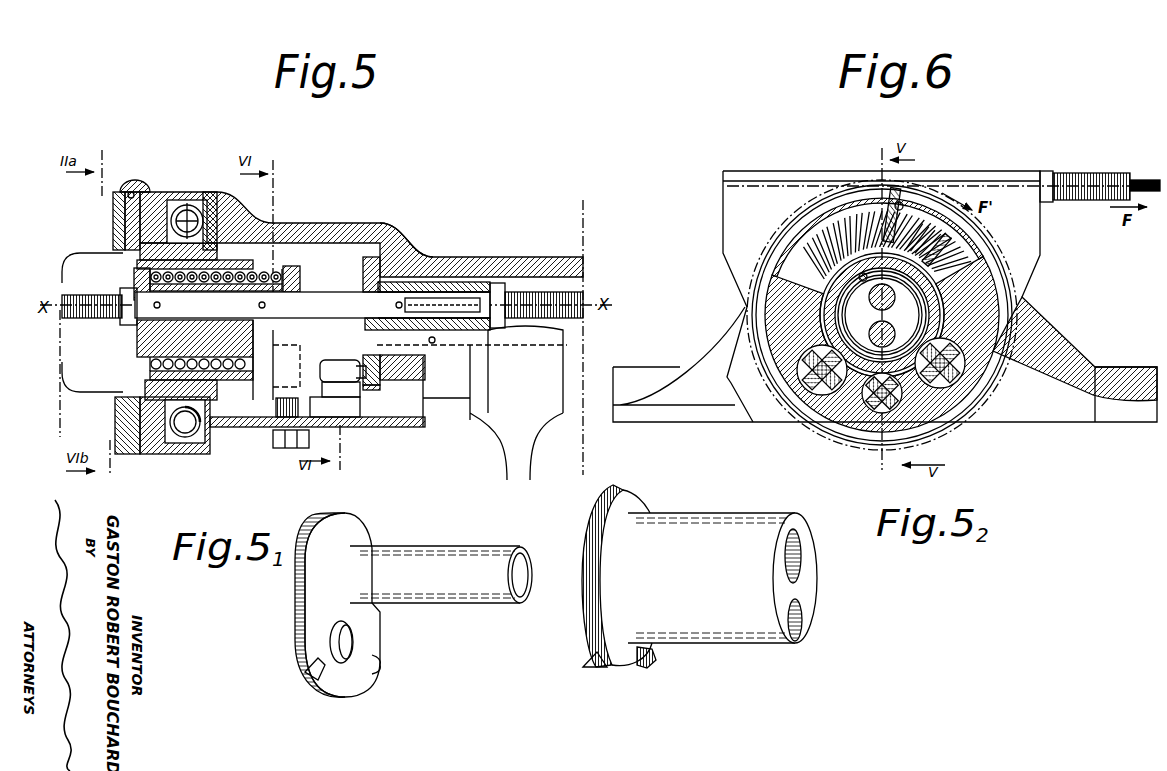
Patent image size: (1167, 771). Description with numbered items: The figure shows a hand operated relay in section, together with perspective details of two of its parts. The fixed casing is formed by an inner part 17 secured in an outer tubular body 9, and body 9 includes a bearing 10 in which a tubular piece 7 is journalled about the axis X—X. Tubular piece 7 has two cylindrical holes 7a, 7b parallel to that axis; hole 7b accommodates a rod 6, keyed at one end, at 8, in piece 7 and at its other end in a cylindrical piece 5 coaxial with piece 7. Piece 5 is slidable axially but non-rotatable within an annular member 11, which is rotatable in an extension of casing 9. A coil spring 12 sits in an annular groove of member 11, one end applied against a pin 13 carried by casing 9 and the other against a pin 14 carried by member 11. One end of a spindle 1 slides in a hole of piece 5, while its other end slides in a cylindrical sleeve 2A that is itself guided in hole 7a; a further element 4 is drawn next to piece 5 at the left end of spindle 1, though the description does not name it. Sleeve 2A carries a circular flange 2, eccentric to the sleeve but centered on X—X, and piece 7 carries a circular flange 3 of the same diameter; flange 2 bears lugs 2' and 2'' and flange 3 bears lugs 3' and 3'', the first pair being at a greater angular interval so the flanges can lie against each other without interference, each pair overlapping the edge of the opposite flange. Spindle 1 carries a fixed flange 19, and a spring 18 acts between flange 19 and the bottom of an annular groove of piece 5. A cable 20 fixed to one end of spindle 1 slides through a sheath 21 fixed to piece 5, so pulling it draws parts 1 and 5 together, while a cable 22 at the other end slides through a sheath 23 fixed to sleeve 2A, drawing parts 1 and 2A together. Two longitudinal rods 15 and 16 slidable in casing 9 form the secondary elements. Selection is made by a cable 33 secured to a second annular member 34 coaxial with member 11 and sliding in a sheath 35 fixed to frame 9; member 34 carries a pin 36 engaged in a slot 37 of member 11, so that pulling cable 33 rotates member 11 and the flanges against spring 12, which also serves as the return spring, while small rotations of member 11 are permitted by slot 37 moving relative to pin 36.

In FIG. 5, the spindle 1 is at (318, 300).
In FIG. 6, the spindle 1 is at (772, 262).
In FIG. 5, the circular flange 2 is at (376, 246).
In FIG. 6, the circular flange 2 is at (938, 315).
The circular flange 2 is at (338, 600).
In FIG. 5, the cylindrical sleeve 2A is at (428, 290).
The cylindrical sleeve 2A is at (415, 562).
The lug 2' is at (294, 678).
The lug 2'' is at (401, 668).
In FIG. 5, the circular flange 3 is at (406, 232).
In FIG. 6, the circular flange 3 is at (947, 315).
The circular flange 3 is at (626, 571).
In FIG. 5, the lug 3' is at (374, 421).
The lug 3' is at (582, 657).
The lug 3'' is at (675, 662).
In FIG. 5, the shaft collar 4 is at (128, 330).
In FIG. 5, the cylindrical piece 5 is at (160, 338).
In FIG. 6, the cylindrical piece 5 is at (780, 252).
In FIG. 5, the rod 6 is at (268, 343).
In FIG. 6, the rod 6 is at (860, 325).
In FIG. 5, the tubular piece 7 is at (453, 358).
The tubular piece 7 is at (683, 530).
The cylindrical hole 7a is at (800, 558).
The cylindrical hole 7b is at (815, 620).
In FIG. 5, the keyed end 8 is at (432, 343).
In FIG. 5, the outer tubular body 9 is at (133, 190).
In FIG. 6, the outer tubular body 9 is at (760, 195).
In FIG. 5, the bearing 10 is at (424, 268).
In FIG. 5, the annular member 11 is at (150, 441).
In FIG. 6, the annular member 11 is at (853, 212).
In FIG. 5, the coil spring 12 is at (185, 435).
In FIG. 6, the coil spring 12 is at (823, 207).
In FIG. 5, the pin 13 is at (208, 225).
In FIG. 6, the pin 13 is at (888, 192).
In FIG. 5, the pin 14 is at (183, 212).
In FIG. 6, the pin 14 is at (902, 206).
In FIG. 5, the longitudinal rod 15 is at (467, 380).
In FIG. 6, the longitudinal rod 15 is at (812, 372).
In FIG. 6, the longitudinal rod 16 is at (955, 375).
In FIG. 5, the inner part 17 is at (357, 408).
In FIG. 6, the inner part 17 is at (880, 400).
In FIG. 5, the spring 18 is at (240, 383).
In FIG. 6, the spring 18 is at (923, 322).
In FIG. 5, the flange 19 is at (300, 282).
In FIG. 5, the cable 20 is at (143, 302).
In FIG. 5, the sheath 21 is at (73, 294).
In FIG. 5, the cable 22 is at (445, 302).
In FIG. 5, the sheath 23 is at (517, 298).
In FIG. 5, the cable 33 is at (150, 184).
In FIG. 6, the cable 33 is at (1137, 179).
In FIG. 5, the annular member 34 is at (117, 213).
In FIG. 6, the sheath 35 is at (1065, 178).
In FIG. 5, the pin 36 is at (126, 236).
In FIG. 6, the pin 36 is at (950, 212).
In FIG. 6, the slot 37 is at (943, 200).